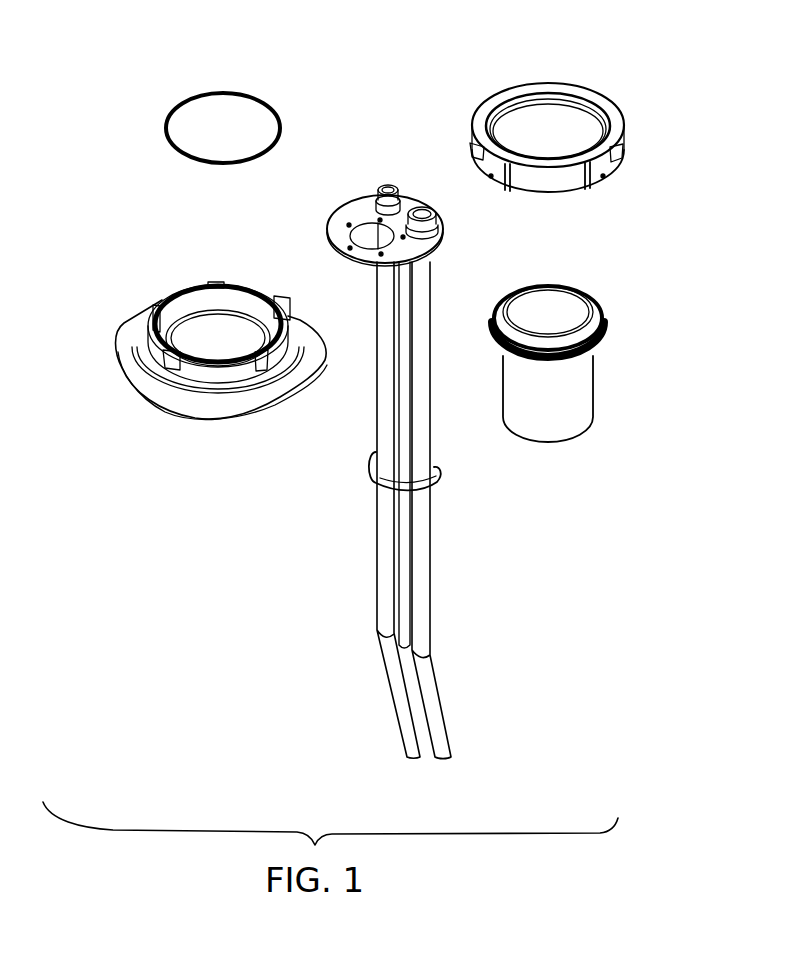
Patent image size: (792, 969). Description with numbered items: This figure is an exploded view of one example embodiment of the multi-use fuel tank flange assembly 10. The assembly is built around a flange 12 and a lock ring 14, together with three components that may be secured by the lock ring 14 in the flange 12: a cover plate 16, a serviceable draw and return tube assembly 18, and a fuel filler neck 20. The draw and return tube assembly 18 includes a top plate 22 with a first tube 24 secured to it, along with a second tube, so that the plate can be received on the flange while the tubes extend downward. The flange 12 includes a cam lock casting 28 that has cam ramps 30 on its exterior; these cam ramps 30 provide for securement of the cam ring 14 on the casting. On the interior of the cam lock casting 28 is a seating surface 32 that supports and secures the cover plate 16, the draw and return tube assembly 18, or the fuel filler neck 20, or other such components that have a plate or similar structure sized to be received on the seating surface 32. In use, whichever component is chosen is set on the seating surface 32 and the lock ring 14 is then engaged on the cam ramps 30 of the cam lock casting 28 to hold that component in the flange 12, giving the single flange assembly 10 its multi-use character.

The multi-use fuel tank flange assembly 10 is at (378, 177).
The flange 12 is at (167, 422).
The lock ring 14 is at (620, 88).
The cover plate 16 is at (172, 98).
The serviceable draw and return tube assembly 18 is at (370, 465).
The fuel filler neck 20 is at (605, 342).
The top plate 22 is at (310, 225).
The first tube 24 is at (382, 707).
The cam lock casting 28 is at (162, 305).
The cam ramps 30 is at (214, 368).
The seating surface 32 is at (232, 298).